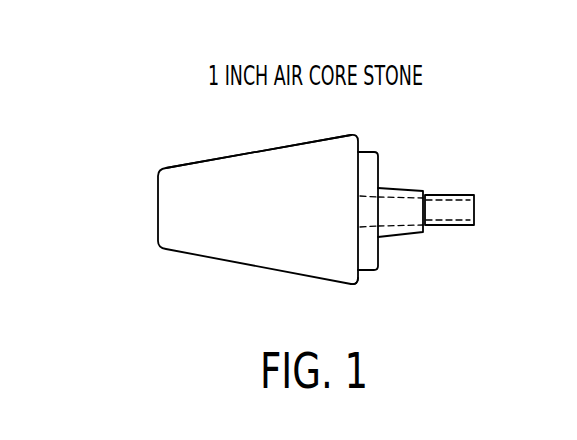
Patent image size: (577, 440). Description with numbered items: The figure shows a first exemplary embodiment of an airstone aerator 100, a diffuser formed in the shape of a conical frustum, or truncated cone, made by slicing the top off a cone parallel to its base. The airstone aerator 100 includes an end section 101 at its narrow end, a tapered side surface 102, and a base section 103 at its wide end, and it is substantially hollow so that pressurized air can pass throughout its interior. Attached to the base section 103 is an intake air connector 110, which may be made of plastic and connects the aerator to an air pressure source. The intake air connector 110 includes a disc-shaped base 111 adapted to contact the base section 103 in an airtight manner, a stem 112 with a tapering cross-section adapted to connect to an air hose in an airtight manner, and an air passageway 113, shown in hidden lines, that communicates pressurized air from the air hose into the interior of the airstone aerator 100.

The airstone aerator 100 is at (152, 273).
The end section 101 is at (157, 195).
The side surface 102 is at (237, 155).
The base section 103 is at (362, 273).
The intake air connector 110 is at (455, 248).
The base 111 is at (378, 165).
The stem 112 is at (460, 194).
The air passageway 113 is at (475, 208).